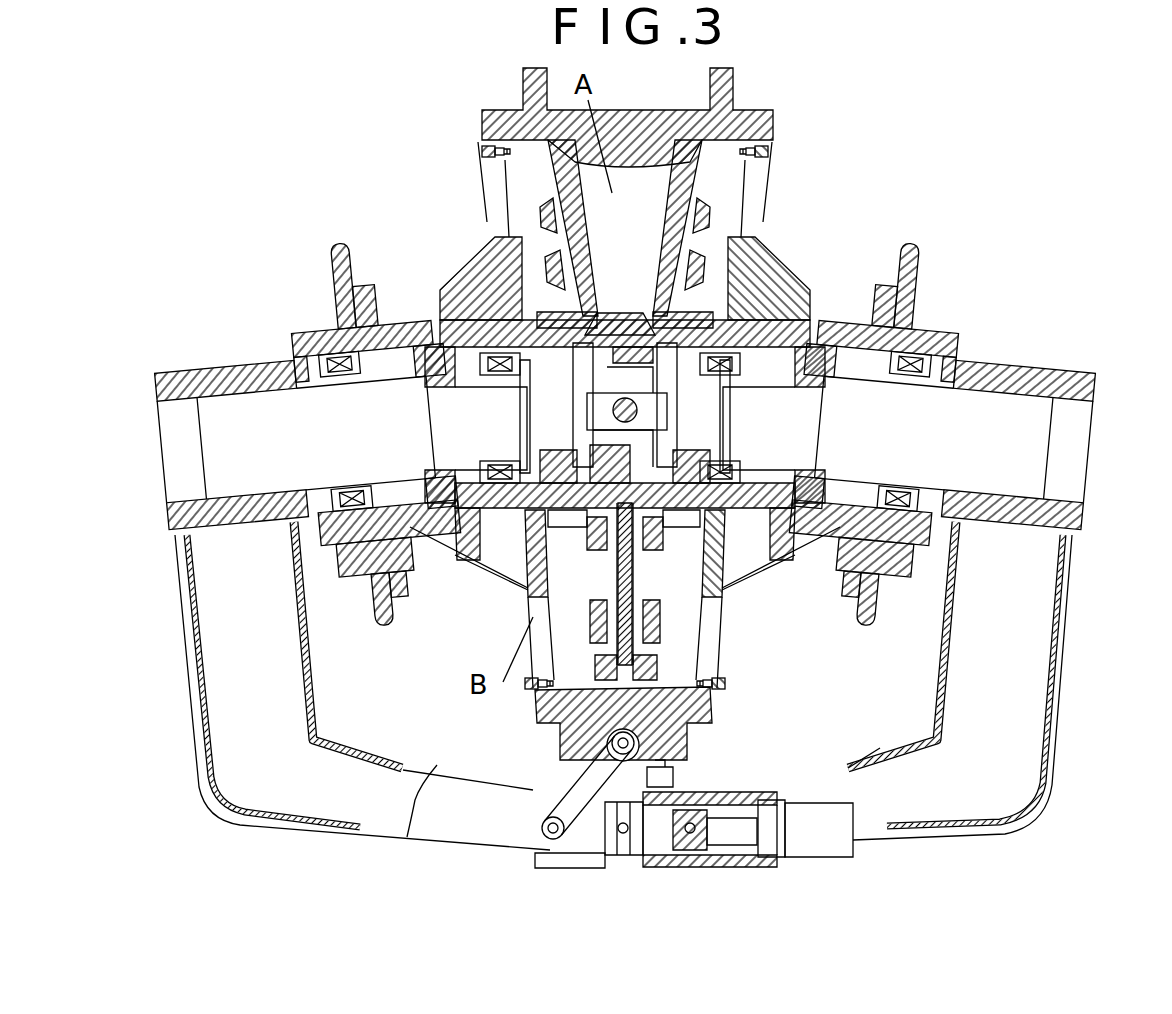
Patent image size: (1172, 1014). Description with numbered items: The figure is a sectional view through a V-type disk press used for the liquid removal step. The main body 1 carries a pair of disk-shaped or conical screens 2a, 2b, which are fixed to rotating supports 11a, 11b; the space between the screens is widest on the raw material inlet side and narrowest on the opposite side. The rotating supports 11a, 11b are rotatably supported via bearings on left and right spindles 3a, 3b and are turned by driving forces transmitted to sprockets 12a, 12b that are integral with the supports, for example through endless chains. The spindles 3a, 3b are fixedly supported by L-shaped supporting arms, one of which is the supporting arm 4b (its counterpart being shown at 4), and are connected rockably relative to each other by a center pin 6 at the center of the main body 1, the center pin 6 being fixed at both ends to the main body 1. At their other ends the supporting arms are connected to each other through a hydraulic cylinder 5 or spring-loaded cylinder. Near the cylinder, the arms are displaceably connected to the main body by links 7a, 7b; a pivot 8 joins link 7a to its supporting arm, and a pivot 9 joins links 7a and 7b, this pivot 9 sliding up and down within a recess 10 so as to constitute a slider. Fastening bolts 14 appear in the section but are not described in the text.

The main body 1 is at (664, 107).
The screen 2a is at (592, 242).
The screen 2b is at (653, 237).
The spindle 3a is at (176, 487).
The spindle 3b is at (1085, 481).
The cover 4 is at (236, 782).
The supporting arm 4b is at (1025, 692).
The hydraulic cylinder 5 is at (840, 818).
The center pin 6 is at (507, 330).
The link 7a is at (566, 778).
The link 7b is at (668, 783).
The pivot 8 is at (546, 826).
The pivot 9 is at (640, 722).
The recess 10 is at (697, 670).
The rotating support 11a is at (405, 330).
The rotating support 11b is at (842, 335).
The sprocket 12a is at (340, 283).
The sprocket 12b is at (905, 292).
The bolt 14 is at (483, 150).